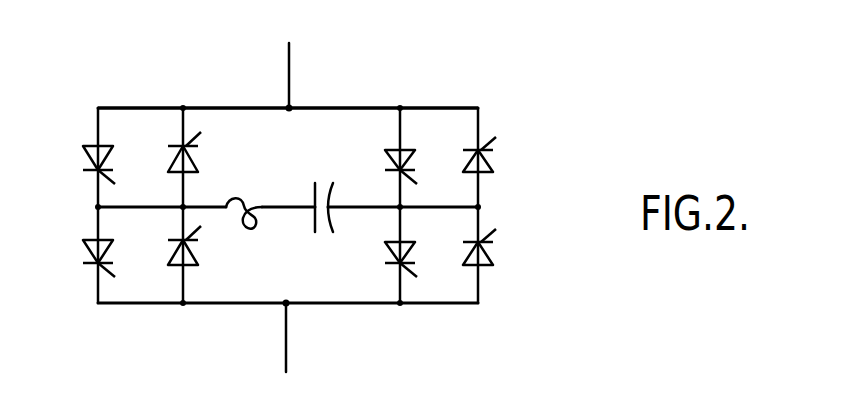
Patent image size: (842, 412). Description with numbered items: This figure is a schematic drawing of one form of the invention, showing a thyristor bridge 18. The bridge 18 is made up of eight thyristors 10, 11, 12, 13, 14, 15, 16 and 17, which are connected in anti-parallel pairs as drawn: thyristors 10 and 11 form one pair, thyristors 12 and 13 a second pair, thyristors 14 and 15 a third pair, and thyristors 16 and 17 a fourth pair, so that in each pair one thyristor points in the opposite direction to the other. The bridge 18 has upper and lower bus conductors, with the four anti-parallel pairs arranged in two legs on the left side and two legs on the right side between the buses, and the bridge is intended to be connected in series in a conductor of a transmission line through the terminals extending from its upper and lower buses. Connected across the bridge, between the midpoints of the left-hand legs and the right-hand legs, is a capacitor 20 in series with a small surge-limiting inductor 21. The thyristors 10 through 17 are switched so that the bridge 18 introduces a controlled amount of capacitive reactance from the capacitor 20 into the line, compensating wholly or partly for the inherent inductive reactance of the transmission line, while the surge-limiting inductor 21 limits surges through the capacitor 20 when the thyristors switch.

The thyristor 10 is at (85, 161).
The thyristor 11 is at (196, 160).
The thyristor 12 is at (85, 250).
The thyristor 13 is at (197, 262).
The thyristor 14 is at (388, 160).
The thyristor 15 is at (486, 166).
The thyristor 16 is at (388, 251).
The thyristor 17 is at (490, 259).
The thyristor bridge 18 is at (404, 91).
The capacitor 20 is at (312, 221).
The surge-limiting inductor 21 is at (254, 229).